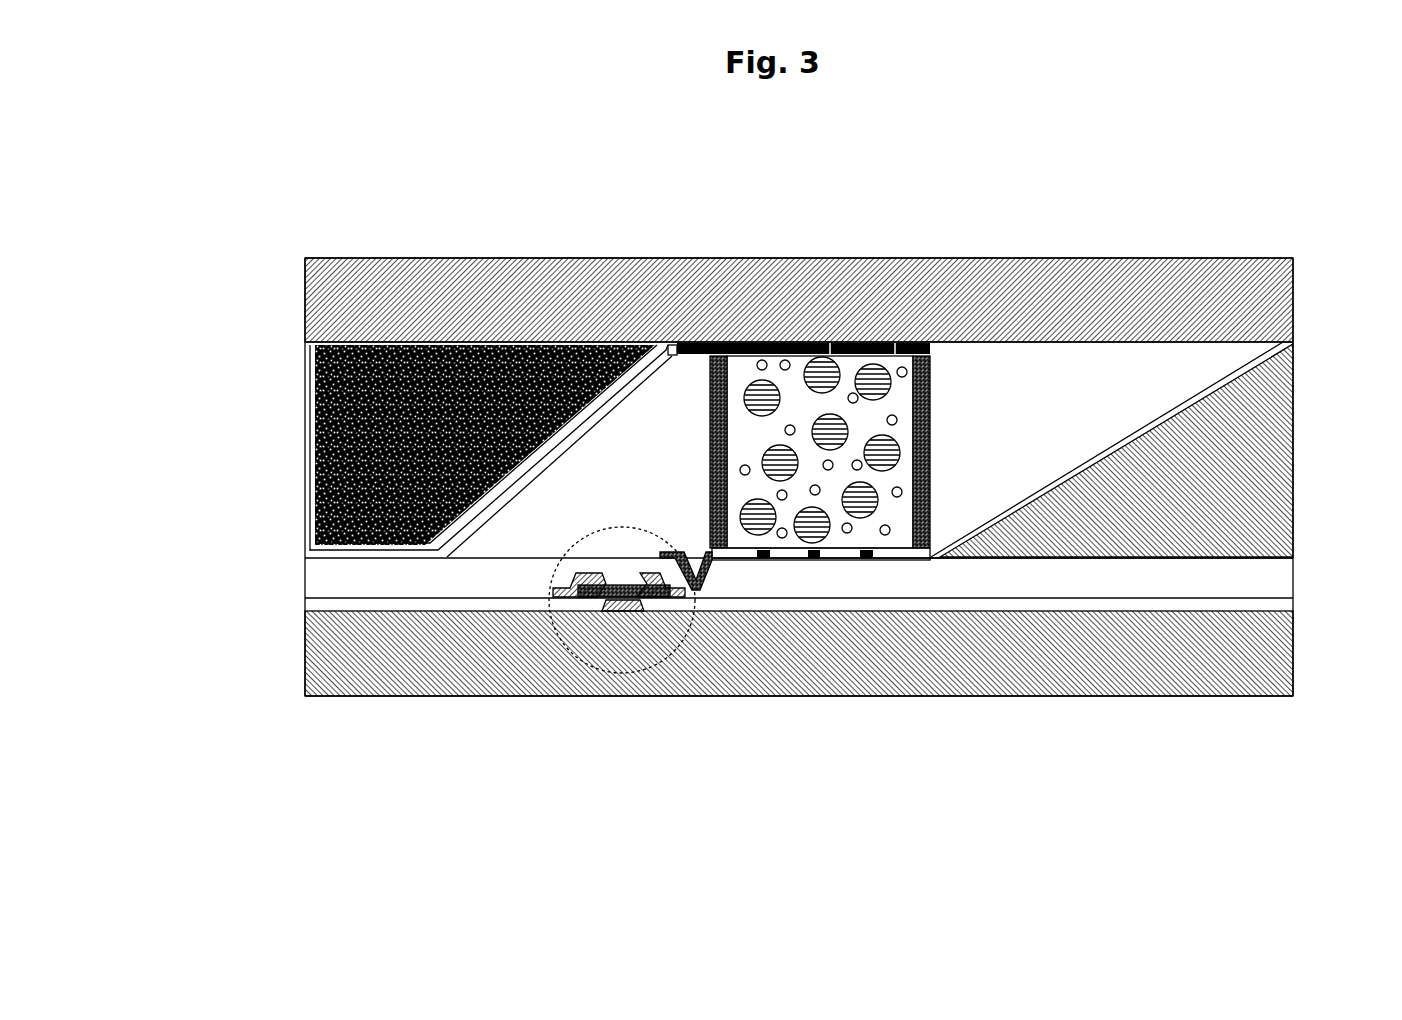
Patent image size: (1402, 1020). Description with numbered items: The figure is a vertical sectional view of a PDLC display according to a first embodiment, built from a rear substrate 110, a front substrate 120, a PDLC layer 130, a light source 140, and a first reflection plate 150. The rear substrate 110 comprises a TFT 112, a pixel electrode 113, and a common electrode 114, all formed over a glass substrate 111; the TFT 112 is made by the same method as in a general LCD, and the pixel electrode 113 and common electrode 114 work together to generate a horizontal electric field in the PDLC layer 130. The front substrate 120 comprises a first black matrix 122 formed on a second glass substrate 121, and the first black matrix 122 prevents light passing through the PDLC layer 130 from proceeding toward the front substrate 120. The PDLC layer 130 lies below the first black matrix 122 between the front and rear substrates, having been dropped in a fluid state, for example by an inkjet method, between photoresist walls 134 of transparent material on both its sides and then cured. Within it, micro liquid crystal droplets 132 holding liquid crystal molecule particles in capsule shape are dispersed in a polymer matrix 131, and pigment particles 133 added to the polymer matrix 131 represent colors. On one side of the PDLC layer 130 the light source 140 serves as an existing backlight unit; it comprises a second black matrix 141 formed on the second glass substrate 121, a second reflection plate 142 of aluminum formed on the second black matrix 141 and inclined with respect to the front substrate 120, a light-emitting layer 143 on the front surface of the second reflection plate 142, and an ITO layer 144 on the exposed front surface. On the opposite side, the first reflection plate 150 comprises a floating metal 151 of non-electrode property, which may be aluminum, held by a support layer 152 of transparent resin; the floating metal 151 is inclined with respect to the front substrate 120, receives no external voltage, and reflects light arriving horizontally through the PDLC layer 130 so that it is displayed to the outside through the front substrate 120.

The rear substrate 110 is at (565, 701).
The glass substrate 111 is at (985, 680).
The TFT 112 is at (625, 670).
The pixel electrode 113 is at (694, 596).
The common electrode 114 is at (788, 562).
The front substrate 120 is at (1050, 252).
The second glass substrate 121 is at (735, 280).
The first black matrix 122 is at (832, 345).
The PDLC layer 130 is at (938, 390).
The polymer matrix 131 is at (897, 355).
The micro liquid crystal droplets 132 is at (905, 460).
The pigment particles 133 is at (743, 474).
The photoresist walls 134 is at (717, 400).
The light source 140 is at (299, 484).
The second black matrix 141 is at (400, 347).
The second reflection plate 142 is at (605, 385).
The light-emitting layer 143 is at (668, 355).
The ITO layer 144 is at (562, 458).
The first reflection plate 150 is at (1302, 455).
The floating metal 151 is at (1108, 455).
The support layer 152 is at (1200, 450).